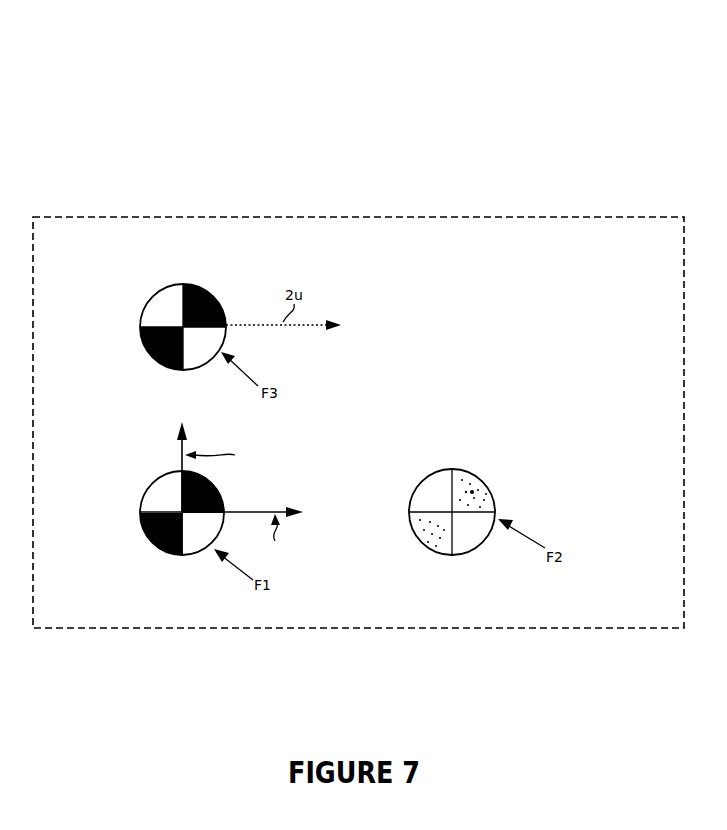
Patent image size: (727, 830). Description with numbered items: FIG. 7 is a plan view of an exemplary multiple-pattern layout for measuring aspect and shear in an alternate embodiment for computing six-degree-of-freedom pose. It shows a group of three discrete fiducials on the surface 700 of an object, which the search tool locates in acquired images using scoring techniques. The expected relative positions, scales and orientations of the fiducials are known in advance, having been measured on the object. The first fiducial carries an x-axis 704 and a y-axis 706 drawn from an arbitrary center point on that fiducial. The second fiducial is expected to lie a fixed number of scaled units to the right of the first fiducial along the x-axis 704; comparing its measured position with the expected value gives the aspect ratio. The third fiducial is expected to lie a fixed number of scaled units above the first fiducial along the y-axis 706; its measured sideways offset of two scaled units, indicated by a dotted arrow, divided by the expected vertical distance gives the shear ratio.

The surface of object 700 is at (562, 85).
The x-axis 704 is at (243, 510).
The y-axis 706 is at (181, 457).